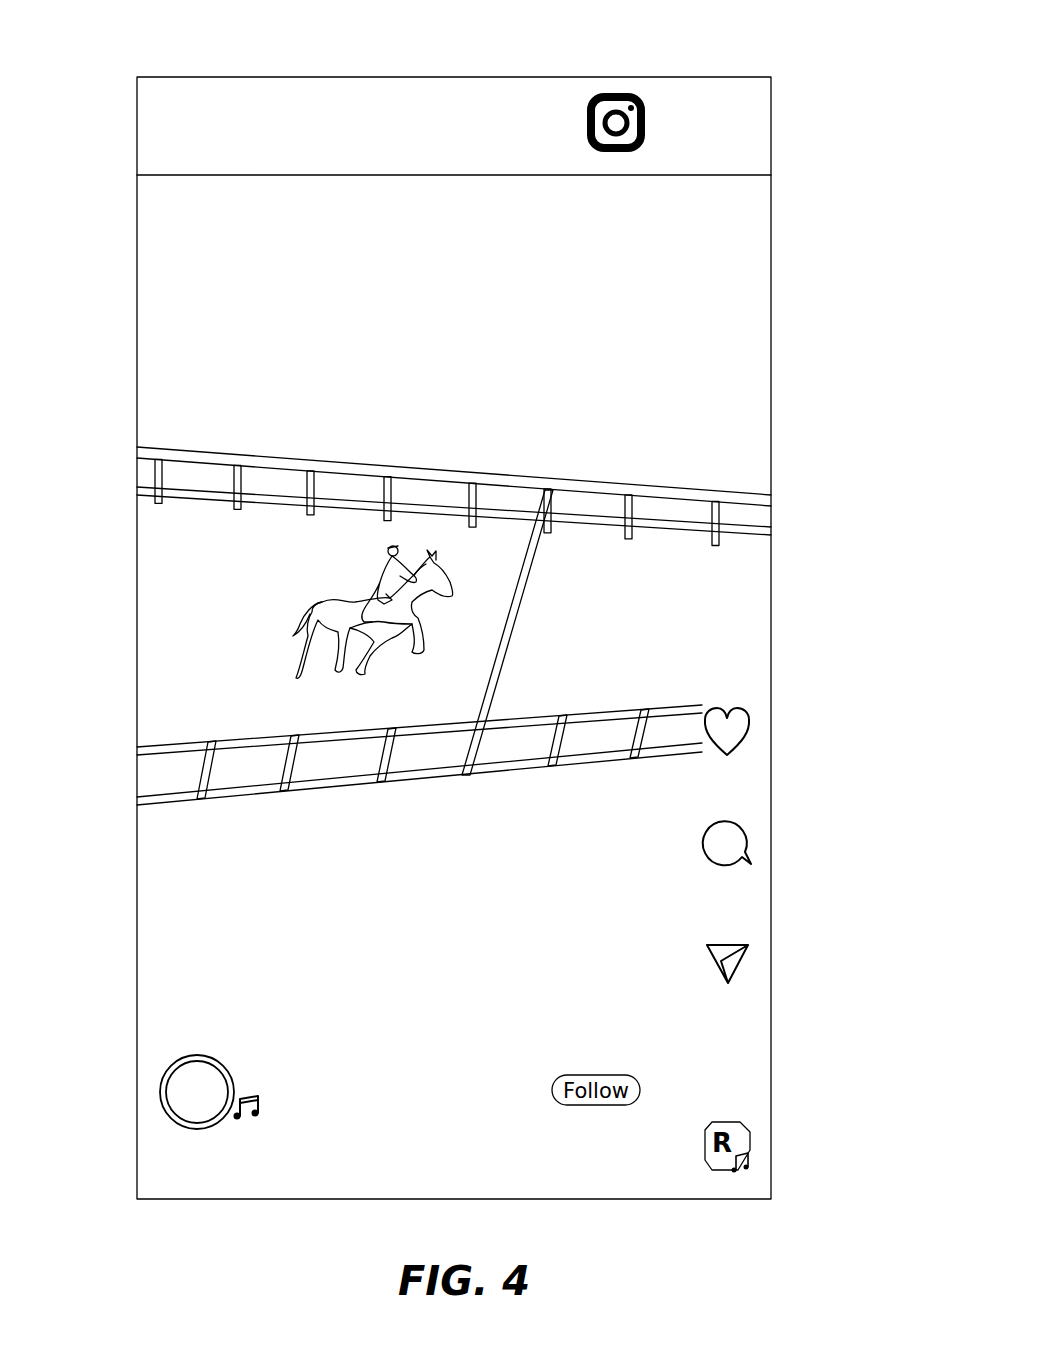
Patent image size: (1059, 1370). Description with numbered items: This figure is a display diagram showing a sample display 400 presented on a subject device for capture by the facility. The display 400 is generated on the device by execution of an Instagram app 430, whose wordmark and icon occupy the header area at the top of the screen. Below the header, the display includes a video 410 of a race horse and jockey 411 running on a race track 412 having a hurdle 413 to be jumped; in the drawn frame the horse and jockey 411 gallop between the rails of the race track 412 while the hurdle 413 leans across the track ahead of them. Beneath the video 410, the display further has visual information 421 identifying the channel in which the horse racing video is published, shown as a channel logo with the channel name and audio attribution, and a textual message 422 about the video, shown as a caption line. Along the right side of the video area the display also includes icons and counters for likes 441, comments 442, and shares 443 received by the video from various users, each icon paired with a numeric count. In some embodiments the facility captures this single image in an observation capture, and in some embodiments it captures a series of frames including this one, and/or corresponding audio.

The display 400 is at (785, 43).
The video 410 is at (120, 195).
The race horse and jockey 411 is at (358, 578).
The race track 412 is at (677, 490).
The hurdle 413 is at (498, 676).
The visual information 421 is at (230, 1063).
The textual message 422 is at (150, 1158).
The Instagram app 430 is at (753, 139).
The likes 441 is at (752, 729).
The comments 442 is at (751, 842).
The shares 443 is at (745, 960).